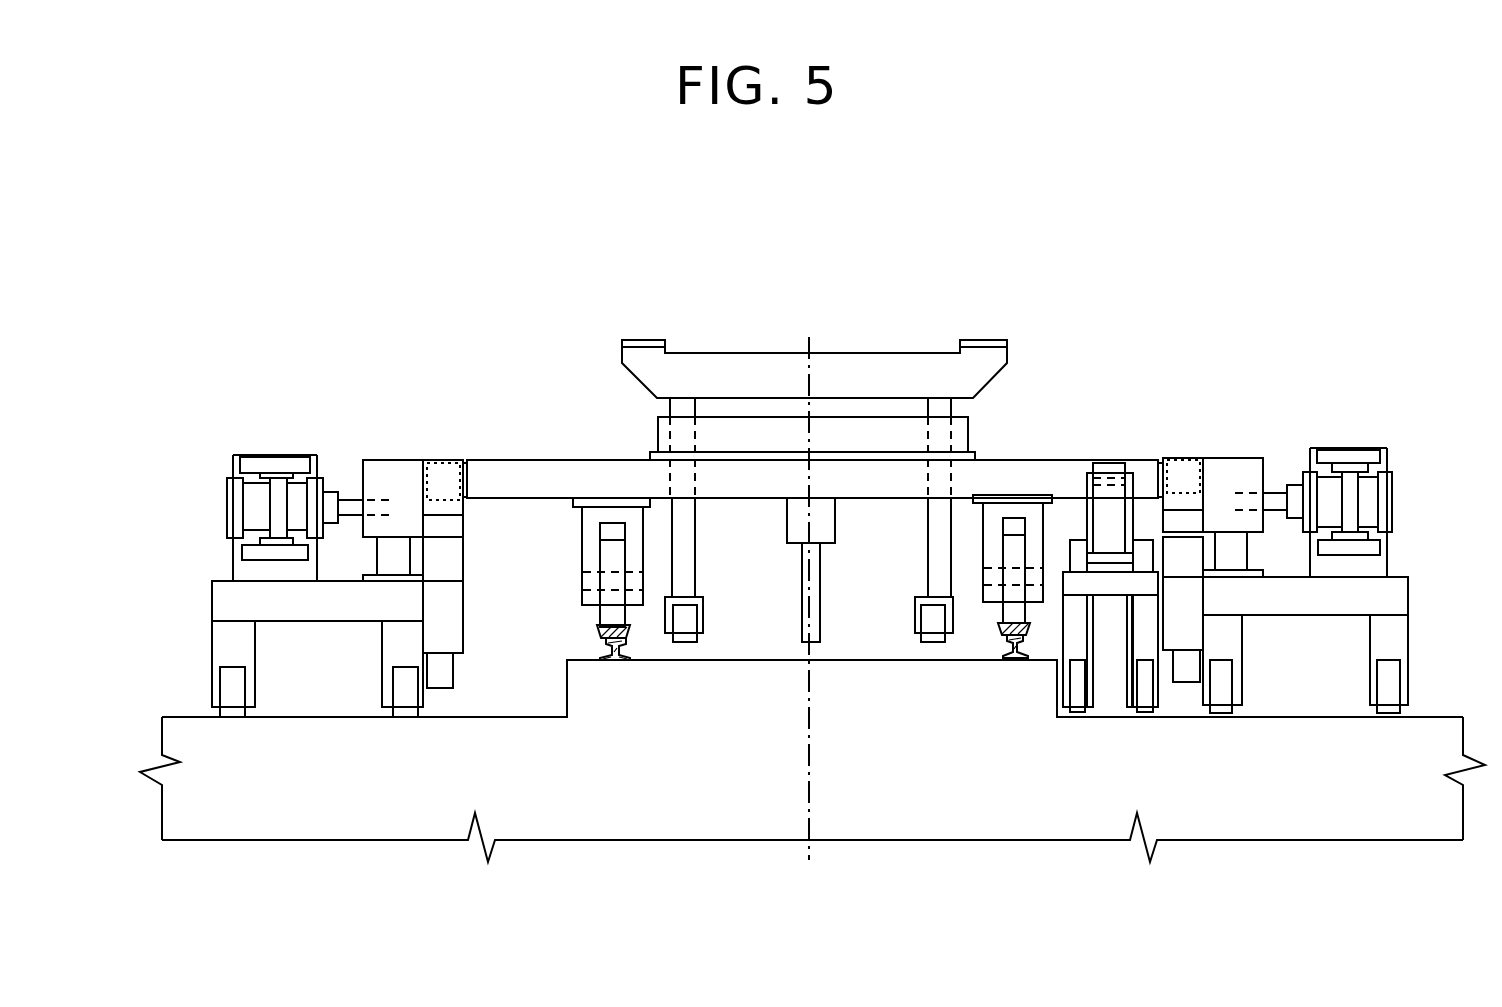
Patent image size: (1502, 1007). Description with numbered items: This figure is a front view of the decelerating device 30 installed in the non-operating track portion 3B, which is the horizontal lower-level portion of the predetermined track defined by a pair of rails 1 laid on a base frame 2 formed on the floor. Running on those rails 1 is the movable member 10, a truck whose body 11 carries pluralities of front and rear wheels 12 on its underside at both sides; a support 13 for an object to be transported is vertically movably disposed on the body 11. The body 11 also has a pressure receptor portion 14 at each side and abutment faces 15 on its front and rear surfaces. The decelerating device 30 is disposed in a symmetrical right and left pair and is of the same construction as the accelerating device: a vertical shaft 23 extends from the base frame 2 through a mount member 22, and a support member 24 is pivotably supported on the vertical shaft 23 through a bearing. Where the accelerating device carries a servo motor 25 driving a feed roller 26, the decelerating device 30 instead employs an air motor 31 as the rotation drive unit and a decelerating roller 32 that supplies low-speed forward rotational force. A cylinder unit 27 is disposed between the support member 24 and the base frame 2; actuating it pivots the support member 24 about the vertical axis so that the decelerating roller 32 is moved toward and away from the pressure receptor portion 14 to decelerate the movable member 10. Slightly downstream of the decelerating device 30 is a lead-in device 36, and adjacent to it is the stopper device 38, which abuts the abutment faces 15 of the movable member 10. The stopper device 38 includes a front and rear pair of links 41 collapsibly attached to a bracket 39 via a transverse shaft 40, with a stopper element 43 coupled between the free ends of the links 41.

The rails 1 is at (604, 660).
The base frame 2 is at (545, 802).
The non-operating track portion 3B is at (1117, 357).
The movable member 10 is at (990, 450).
The body 11 is at (532, 460).
The wheels 12 is at (615, 615).
The support 13 is at (843, 372).
The pressure receptor portion 14 is at (447, 462).
The abutment faces 15 is at (745, 465).
The mount member 22 is at (243, 605).
The vertical shaft 23 is at (382, 555).
The support member 24 is at (395, 470).
The servo motor 25 is at (1183, 625).
The feed roller 26 is at (1192, 457).
The cylinder unit 27 is at (230, 520).
The decelerating device 30 is at (347, 458).
The air motor 31 is at (455, 637).
The decelerating roller 32 is at (437, 458).
The lead-in device 36 is at (1283, 455).
The stopper device 38 is at (1055, 625).
The bracket 39 is at (1080, 637).
The transverse shaft 40 is at (1112, 560).
The links 41 is at (1088, 525).
The stopper element 43 is at (1112, 462).